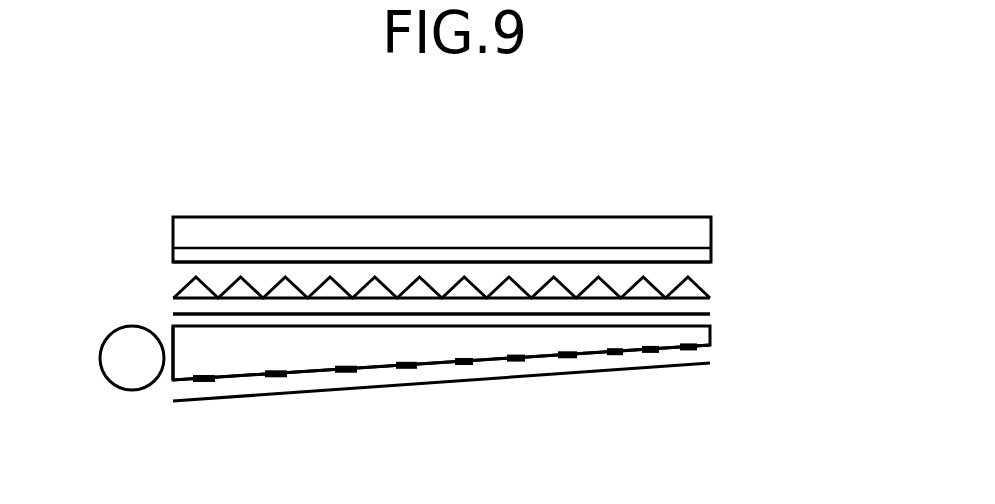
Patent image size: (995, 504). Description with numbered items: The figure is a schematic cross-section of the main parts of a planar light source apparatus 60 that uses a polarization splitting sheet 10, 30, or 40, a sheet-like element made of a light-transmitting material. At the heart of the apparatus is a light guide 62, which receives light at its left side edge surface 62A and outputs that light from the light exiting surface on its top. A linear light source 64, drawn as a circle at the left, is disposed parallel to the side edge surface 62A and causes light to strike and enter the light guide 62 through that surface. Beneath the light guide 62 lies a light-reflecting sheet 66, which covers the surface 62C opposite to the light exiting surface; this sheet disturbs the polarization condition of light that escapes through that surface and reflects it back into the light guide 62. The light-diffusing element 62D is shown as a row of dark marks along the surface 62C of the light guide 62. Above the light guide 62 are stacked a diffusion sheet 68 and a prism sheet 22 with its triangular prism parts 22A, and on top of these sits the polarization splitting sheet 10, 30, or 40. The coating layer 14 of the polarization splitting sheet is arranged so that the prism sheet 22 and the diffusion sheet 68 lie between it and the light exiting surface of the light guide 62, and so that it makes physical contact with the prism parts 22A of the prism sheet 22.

The planar light source apparatus 60 is at (237, 200).
The polarization splitting sheet 10 is at (528, 238).
The polarization splitting sheet 30 is at (442, 239).
The polarization splitting sheet 40 is at (727, 213).
The coating layer 14 is at (700, 264).
The prism sheet 22 is at (450, 270).
The prism parts 22A is at (185, 292).
The diffusion sheet 68 is at (175, 313).
The light guide 62 is at (418, 381).
The side edge surface 62A is at (173, 327).
The surface opposite to the light exiting surface 62C is at (490, 358).
The light-diffusing element 62D is at (278, 378).
The linear light source 64 is at (132, 380).
The light-reflecting sheet 66 is at (688, 367).